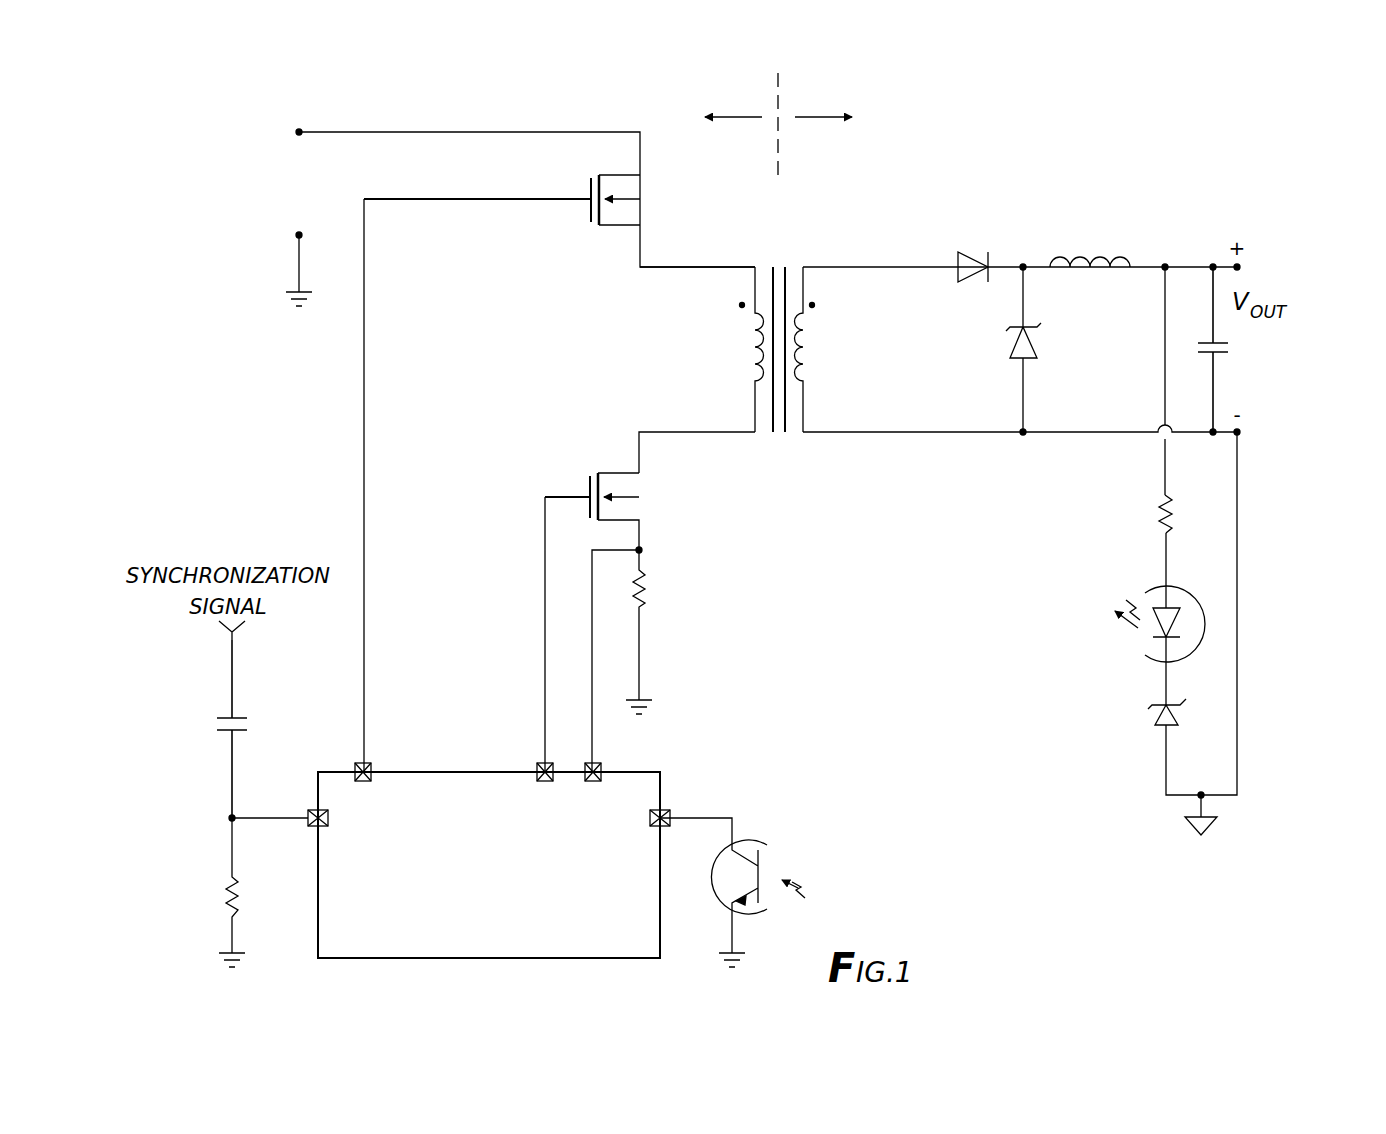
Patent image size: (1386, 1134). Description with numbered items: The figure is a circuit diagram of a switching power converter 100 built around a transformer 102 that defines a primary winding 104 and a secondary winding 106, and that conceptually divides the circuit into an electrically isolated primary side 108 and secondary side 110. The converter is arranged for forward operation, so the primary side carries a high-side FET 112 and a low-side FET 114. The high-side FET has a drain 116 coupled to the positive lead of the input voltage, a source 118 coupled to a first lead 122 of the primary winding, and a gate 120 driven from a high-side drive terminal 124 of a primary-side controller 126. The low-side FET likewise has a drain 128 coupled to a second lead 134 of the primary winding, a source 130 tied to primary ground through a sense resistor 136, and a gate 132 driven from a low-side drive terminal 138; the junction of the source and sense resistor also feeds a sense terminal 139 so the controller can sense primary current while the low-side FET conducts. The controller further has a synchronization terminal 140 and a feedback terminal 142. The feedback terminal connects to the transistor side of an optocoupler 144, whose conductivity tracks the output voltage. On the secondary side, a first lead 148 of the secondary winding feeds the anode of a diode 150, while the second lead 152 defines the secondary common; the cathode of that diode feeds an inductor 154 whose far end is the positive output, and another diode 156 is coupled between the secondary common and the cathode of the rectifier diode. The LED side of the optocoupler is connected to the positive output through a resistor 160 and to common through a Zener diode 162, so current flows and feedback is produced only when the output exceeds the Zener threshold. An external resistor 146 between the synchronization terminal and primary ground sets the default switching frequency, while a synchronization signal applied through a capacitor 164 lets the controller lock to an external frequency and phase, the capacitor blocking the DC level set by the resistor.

The switching power converter 100 is at (258, 120).
The transformer 102 is at (788, 258).
The primary winding 104 is at (738, 348).
The secondary winding 106 is at (815, 327).
The primary side 108 is at (733, 117).
The secondary side 110 is at (828, 117).
The high-side FET 112 is at (585, 230).
The low-side FET 114 is at (575, 460).
The drain 116 is at (641, 176).
The source 118 is at (641, 238).
The gate 120 is at (590, 196).
The first lead 122 is at (706, 269).
The high-side drive terminal 124 is at (368, 763).
The primary-side controller 126 is at (526, 819).
The drain 128 is at (641, 455).
The source 130 is at (641, 530).
The gate 132 is at (552, 495).
The second lead 134 is at (703, 430).
The sense resistor 136 is at (668, 578).
The low-side drive terminal 138 is at (542, 763).
The sense terminal 139 is at (600, 763).
The synchronization terminal 140 is at (314, 808).
The feedback terminal 142 is at (668, 810).
The optocoupler 144 is at (766, 834).
The external resistor 146 is at (224, 885).
The first lead 148 is at (838, 265).
The diode 150 is at (977, 245).
The second lead 152 is at (838, 430).
The inductor 154 is at (1105, 248).
The diode 156 is at (1006, 362).
The resistor 160 is at (1150, 507).
The Zener diode 162 is at (1143, 723).
The capacitor 164 is at (213, 727).